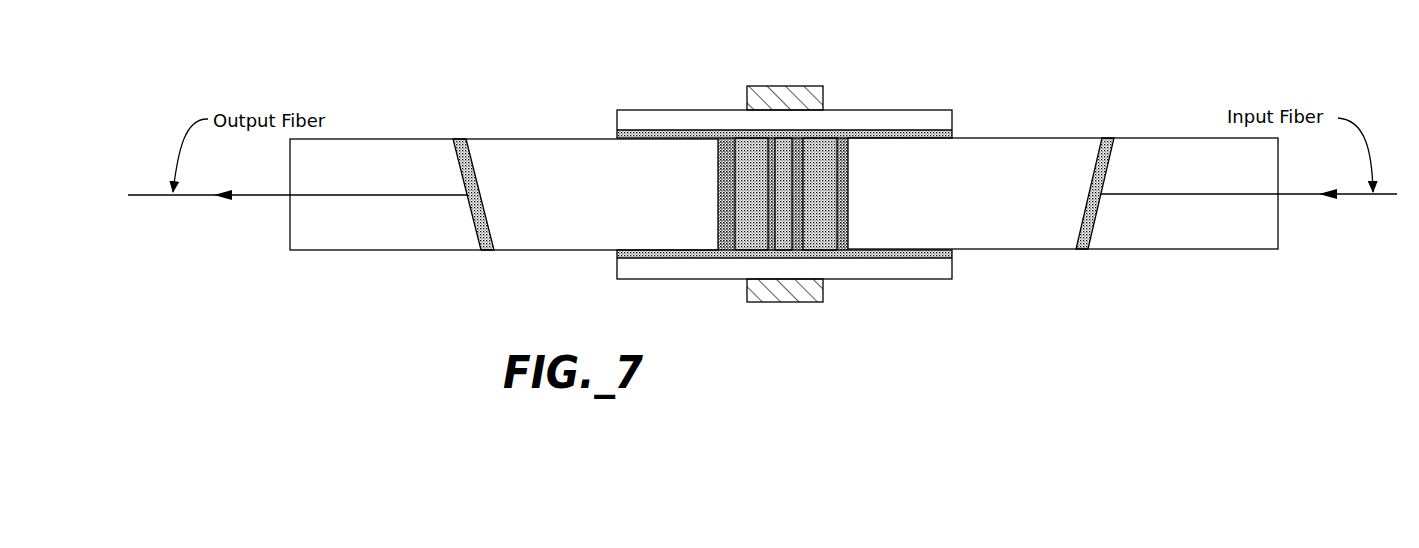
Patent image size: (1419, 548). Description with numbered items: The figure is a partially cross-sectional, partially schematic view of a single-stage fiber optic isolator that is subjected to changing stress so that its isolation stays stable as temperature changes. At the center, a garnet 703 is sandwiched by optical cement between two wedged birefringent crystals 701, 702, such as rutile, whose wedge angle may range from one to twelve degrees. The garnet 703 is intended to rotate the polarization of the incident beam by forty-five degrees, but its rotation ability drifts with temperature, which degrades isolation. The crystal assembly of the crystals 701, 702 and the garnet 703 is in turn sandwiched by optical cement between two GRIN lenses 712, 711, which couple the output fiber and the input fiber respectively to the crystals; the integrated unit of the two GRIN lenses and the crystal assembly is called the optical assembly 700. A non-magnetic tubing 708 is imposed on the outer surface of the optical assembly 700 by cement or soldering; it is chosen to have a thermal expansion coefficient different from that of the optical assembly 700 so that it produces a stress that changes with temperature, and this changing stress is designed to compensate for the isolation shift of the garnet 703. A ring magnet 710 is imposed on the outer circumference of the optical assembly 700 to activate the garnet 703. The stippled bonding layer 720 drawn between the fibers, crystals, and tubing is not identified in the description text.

The optical assembly 700 is at (957, 78).
The wedged birefringent crystal 701 is at (747, 243).
The wedged birefringent crystal 702 is at (824, 243).
The garnet 703 is at (782, 148).
The non-magnetic tubing 708 is at (851, 108).
The ring magnet 710 is at (796, 305).
The GRIN lens 711 is at (1005, 137).
The GRIN lens 712 is at (561, 137).
The bonding material 720 is at (724, 148).